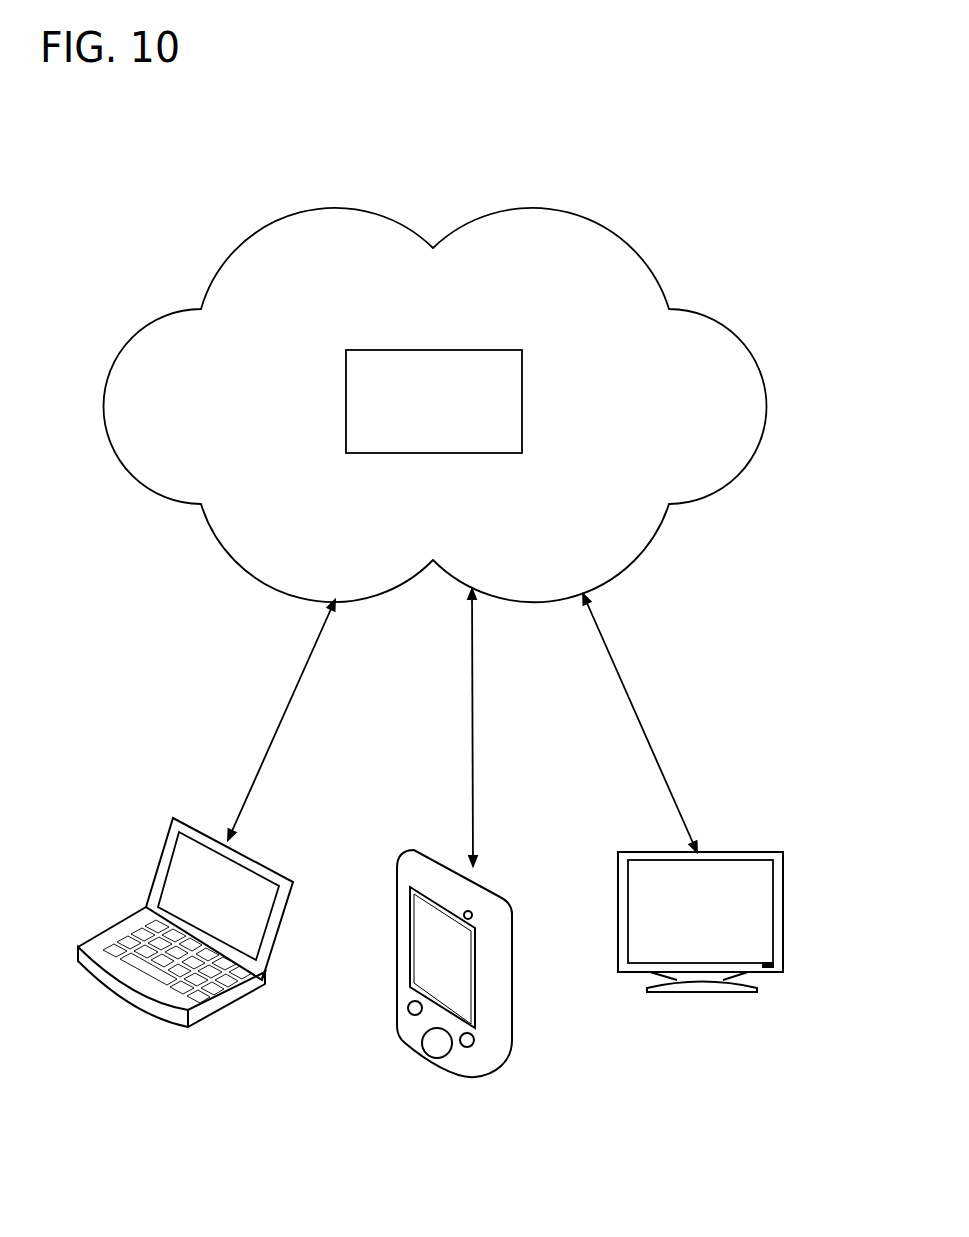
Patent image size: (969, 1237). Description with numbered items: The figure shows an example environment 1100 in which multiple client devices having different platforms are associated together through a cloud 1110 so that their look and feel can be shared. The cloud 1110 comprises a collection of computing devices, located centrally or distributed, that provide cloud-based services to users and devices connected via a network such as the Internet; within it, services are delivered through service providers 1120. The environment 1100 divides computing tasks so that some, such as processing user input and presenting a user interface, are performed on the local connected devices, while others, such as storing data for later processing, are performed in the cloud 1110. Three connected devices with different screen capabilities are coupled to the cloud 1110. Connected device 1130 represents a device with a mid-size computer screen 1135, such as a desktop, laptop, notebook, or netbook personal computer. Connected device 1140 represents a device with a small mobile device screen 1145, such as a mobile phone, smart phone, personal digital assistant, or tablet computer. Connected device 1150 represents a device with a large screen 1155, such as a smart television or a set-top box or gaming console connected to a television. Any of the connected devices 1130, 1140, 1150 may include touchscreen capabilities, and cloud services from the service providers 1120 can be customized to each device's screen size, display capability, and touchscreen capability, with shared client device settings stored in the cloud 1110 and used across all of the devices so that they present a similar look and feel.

The example environment 1100 is at (732, 204).
The cloud 1110 is at (435, 405).
The service providers 1120 is at (434, 401).
The connected device 1130 is at (92, 938).
The computer screen 1135 is at (233, 909).
The connected device 1140 is at (405, 848).
The mobile device screen 1145 is at (462, 970).
The connected device 1150 is at (730, 850).
The large screen 1155 is at (720, 925).